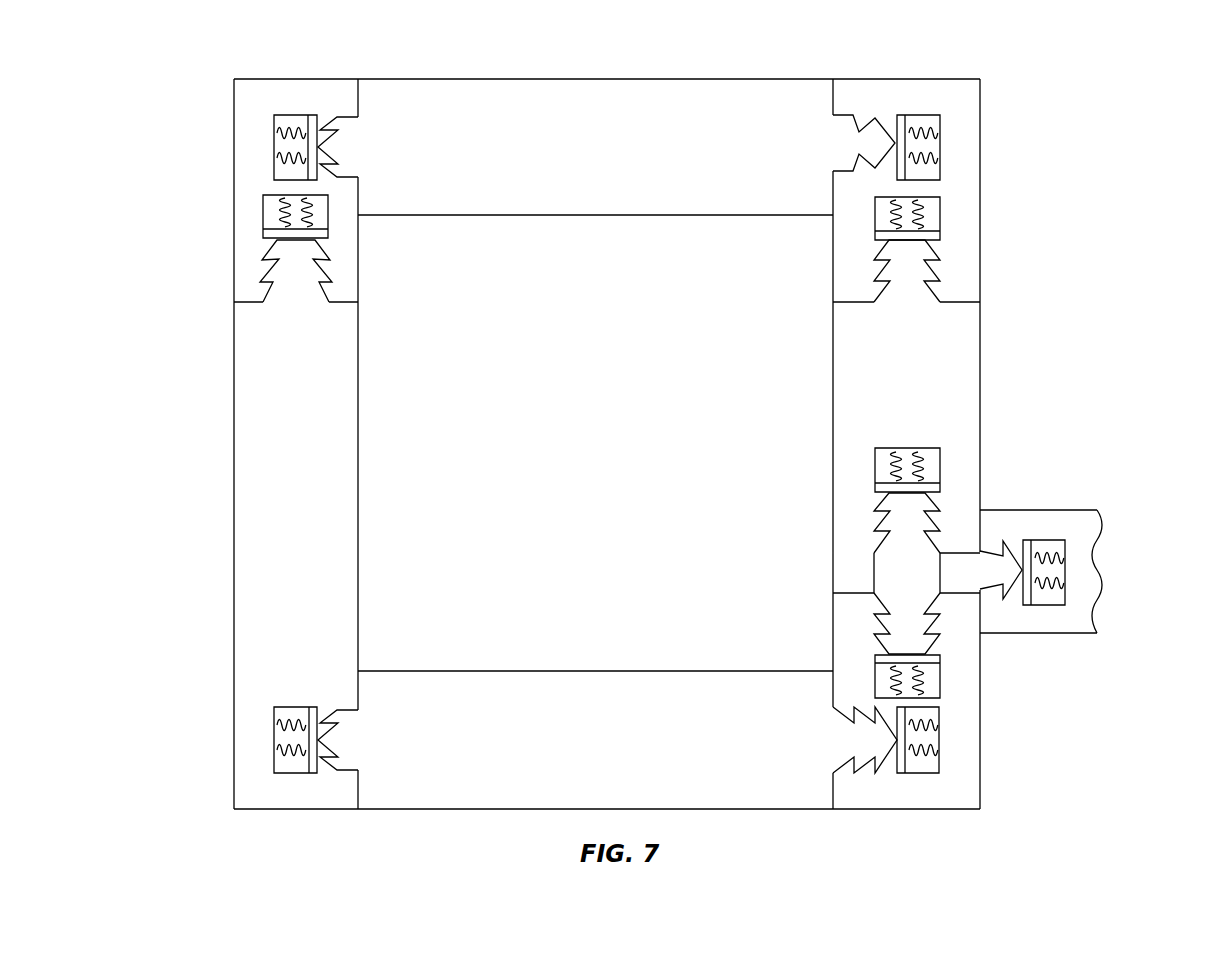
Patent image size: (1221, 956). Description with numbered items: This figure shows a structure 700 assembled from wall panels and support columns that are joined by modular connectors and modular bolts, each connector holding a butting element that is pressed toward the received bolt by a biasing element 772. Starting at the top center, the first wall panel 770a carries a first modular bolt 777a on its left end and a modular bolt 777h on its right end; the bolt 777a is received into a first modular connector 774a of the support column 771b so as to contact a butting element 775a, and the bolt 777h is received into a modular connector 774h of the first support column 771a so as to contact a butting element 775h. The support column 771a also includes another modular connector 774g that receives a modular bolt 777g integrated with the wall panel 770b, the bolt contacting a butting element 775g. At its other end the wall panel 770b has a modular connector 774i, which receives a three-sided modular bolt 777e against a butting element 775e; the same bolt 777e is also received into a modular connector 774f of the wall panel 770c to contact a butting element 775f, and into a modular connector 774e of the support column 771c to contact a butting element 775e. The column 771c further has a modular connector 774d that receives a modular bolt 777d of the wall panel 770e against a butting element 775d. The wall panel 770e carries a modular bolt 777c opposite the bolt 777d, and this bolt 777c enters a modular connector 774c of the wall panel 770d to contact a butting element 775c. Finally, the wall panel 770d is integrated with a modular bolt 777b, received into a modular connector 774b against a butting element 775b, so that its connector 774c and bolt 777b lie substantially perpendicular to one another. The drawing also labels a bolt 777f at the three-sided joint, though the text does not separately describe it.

The structure 700 is at (1052, 150).
The first wall panel 770a is at (610, 165).
The wall panel 770b is at (958, 408).
The wall panel 770c is at (1080, 530).
The wall panel 770d is at (328, 468).
The wall panel 770e is at (607, 700).
The first support column 771a is at (850, 260).
The support column 771b is at (345, 253).
The support column 771c is at (960, 782).
The biasing element 772 is at (276, 174).
The first modular connector 774a is at (325, 122).
The modular connector 774b is at (270, 267).
The modular connector 774c is at (325, 707).
The modular connector 774d is at (864, 768).
The modular connector 774e is at (930, 648).
The modular connector 774f is at (1010, 556).
The modular connector 774g is at (937, 268).
The modular connector 774h is at (866, 117).
The modular connector 774i is at (880, 497).
The butting element 775a is at (312, 126).
The butting element 775b is at (312, 231).
The butting element 775c is at (312, 714).
The butting element 775d is at (905, 766).
The butting element 775e is at (928, 482).
The butting element 775f is at (1035, 595).
The butting element 775g is at (876, 226).
The butting element 775h is at (905, 125).
The first modular bolt 777a is at (350, 145).
The modular bolt 777b is at (297, 270).
The modular bolt 777c is at (350, 738).
The modular bolt 777d is at (862, 742).
The modular bolt 777e is at (905, 528).
The tapered surface 777f is at (995, 573).
The modular bolt 777g is at (907, 277).
The modular bolt 777h is at (840, 147).